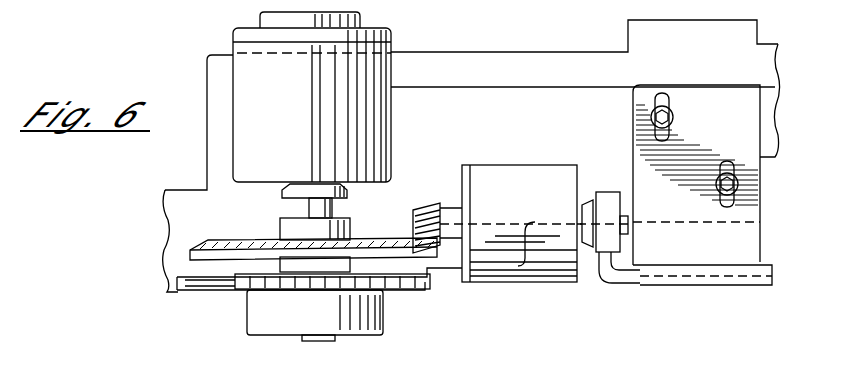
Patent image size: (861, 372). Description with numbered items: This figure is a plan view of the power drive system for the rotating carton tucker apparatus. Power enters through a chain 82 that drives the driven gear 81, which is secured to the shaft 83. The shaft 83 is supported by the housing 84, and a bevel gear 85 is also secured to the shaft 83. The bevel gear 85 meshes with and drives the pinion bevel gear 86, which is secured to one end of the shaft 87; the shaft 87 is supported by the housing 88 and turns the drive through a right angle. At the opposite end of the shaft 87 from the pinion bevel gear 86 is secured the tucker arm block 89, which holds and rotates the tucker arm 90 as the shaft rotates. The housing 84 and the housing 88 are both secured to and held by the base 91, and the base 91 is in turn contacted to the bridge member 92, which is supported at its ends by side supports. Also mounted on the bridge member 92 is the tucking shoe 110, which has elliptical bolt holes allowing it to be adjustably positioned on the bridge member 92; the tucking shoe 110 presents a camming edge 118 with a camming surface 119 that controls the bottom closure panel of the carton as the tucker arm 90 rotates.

The driven gear 81 is at (273, 290).
The chain 82 is at (195, 291).
The shaft 83 is at (308, 208).
The housing 84 is at (391, 114).
The bevel gear 85 is at (190, 243).
The pinion bevel gear 86 is at (426, 202).
The shaft 87 is at (450, 212).
The housing 88 is at (510, 178).
The tucker arm block 89 is at (605, 196).
The tucker arm 90 is at (618, 282).
The base 91 is at (458, 97).
The bridge member 92 is at (506, 60).
The tucking shoe 110 is at (630, 118).
The camming edge 118 is at (745, 265).
The camming surface 119 is at (745, 287).